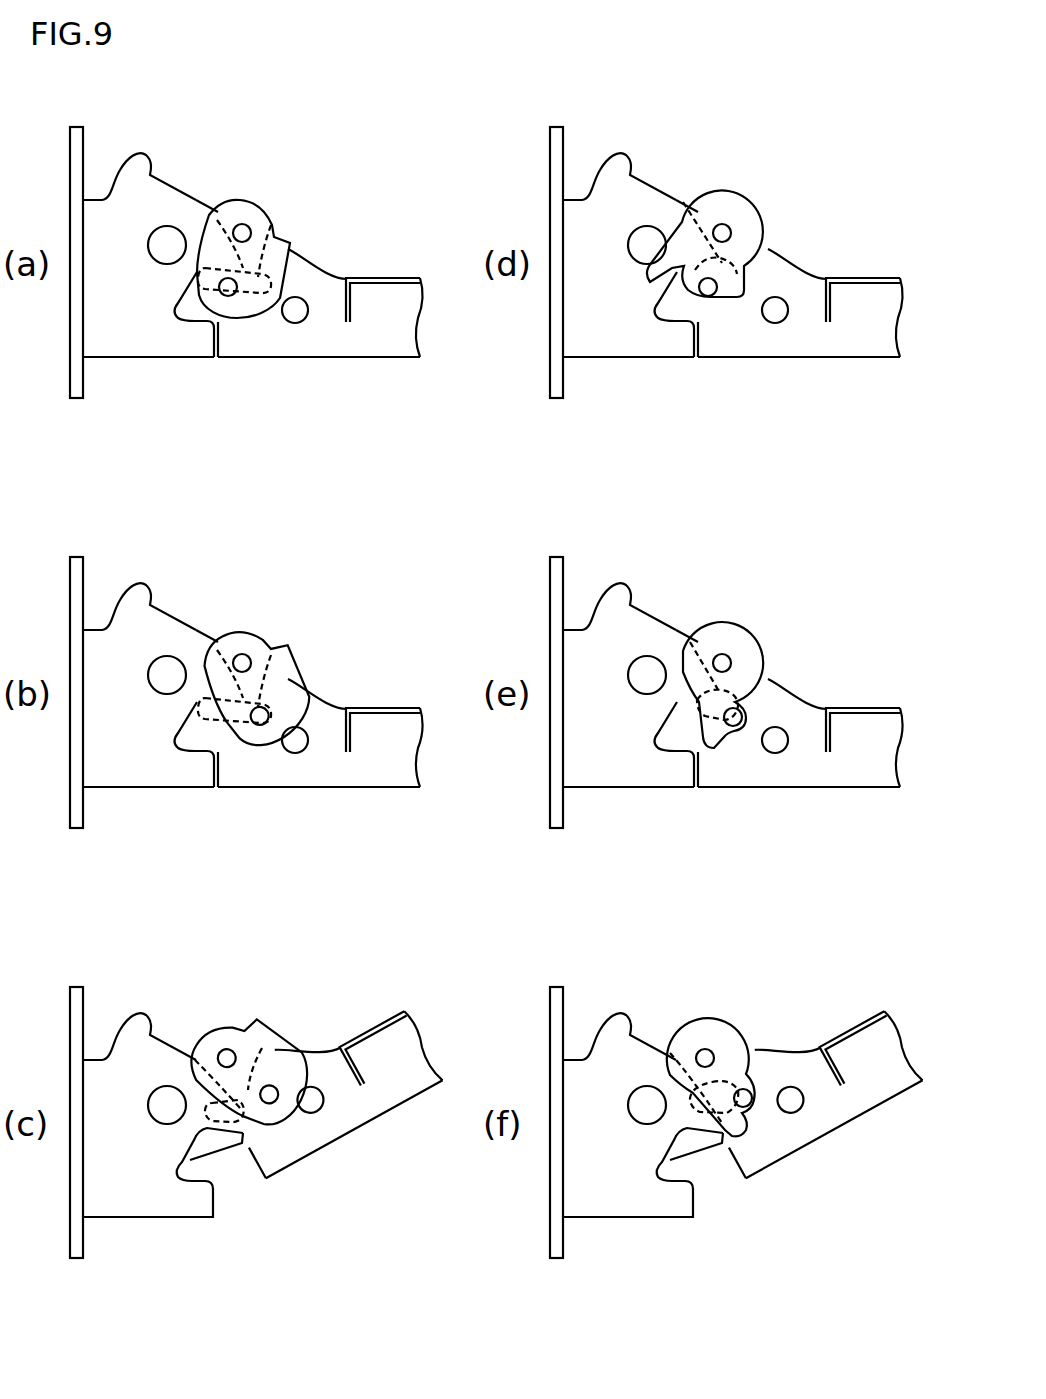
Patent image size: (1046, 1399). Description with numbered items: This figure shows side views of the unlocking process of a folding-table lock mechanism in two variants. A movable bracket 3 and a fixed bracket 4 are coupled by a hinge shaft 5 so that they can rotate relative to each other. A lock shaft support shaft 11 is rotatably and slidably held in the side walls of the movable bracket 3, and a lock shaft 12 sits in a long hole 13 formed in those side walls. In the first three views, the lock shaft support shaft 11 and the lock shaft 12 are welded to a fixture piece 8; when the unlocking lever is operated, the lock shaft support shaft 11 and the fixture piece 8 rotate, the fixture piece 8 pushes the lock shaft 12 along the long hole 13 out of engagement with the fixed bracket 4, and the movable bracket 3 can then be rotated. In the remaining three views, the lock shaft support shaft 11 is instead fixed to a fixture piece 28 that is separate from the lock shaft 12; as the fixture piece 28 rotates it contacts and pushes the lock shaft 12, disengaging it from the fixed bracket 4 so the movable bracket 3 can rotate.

The movable bracket 3 is at (842, 1282).
The fixed bracket 4 is at (632, 1282).
The hinge shaft 5 is at (166, 1086).
The fixture piece 8 is at (312, 1282).
The lock shaft support shaft 11 is at (229, 1049).
The lock shaft 12 is at (740, 1282).
The long hole 13 is at (707, 1117).
The fixture piece 28 is at (745, 1030).